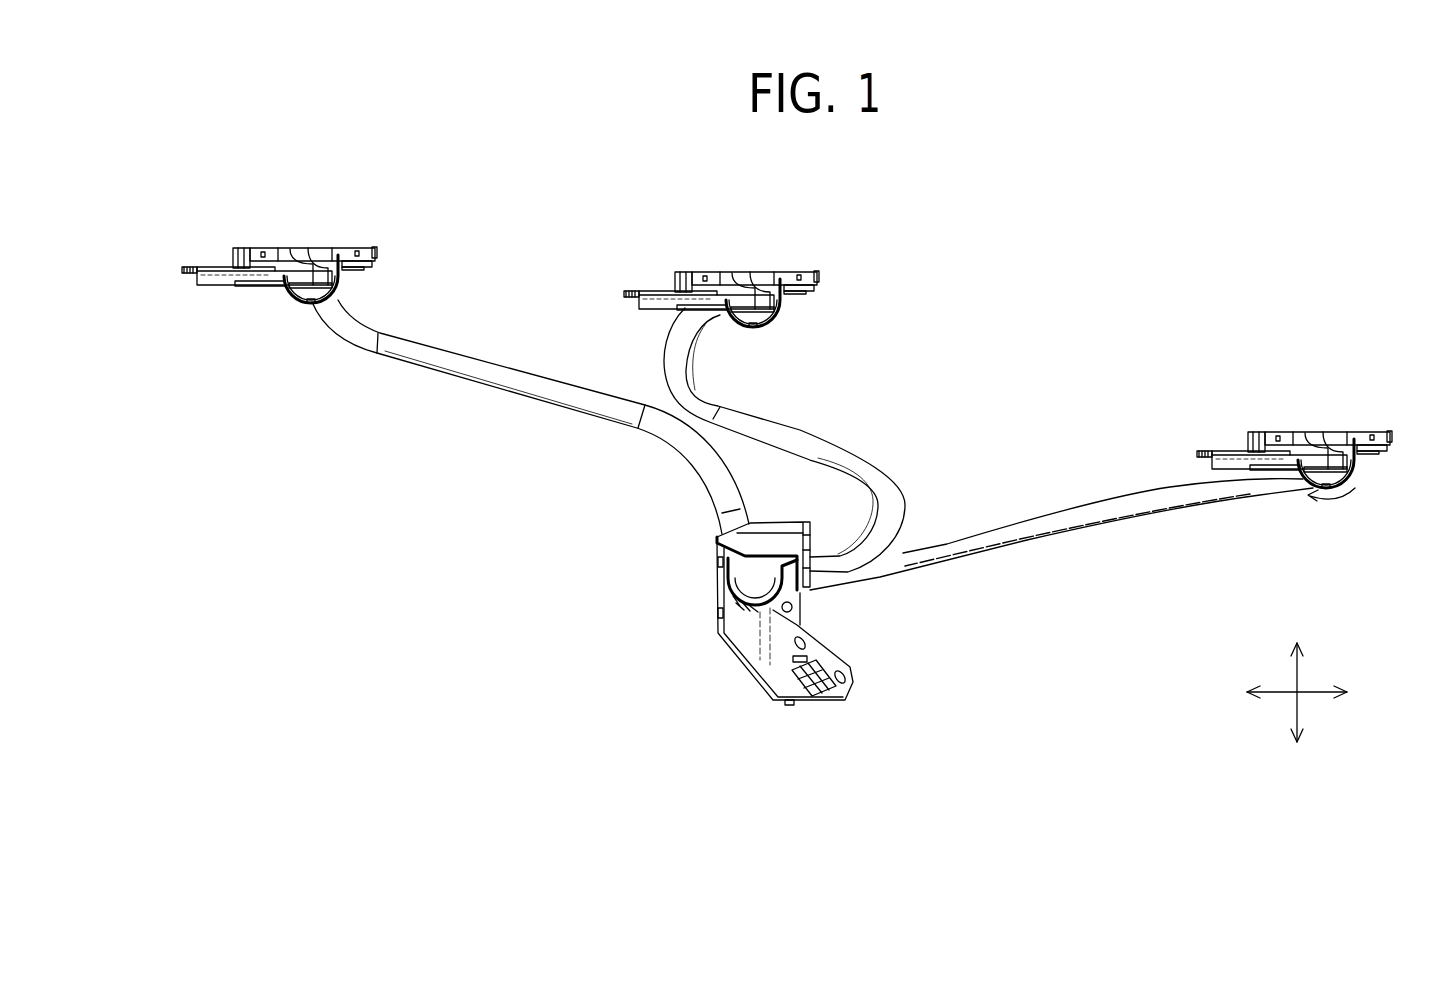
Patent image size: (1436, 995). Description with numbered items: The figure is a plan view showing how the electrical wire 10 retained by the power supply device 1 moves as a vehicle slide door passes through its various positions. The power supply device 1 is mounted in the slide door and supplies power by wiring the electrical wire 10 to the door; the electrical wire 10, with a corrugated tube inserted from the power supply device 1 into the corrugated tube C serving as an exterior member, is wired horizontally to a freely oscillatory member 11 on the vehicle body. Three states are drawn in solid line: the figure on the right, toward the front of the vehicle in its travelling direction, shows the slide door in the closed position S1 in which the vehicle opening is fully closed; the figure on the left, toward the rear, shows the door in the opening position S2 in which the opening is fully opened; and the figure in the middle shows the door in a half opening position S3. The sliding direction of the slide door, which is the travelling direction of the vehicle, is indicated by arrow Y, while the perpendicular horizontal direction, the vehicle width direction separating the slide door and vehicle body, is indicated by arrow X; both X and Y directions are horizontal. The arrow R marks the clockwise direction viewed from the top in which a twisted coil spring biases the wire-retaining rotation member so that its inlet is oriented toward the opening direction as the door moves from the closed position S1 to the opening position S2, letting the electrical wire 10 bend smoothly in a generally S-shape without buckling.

The power supply device 1 is at (337, 287).
The electrical wire 10 is at (493, 372).
The freely oscillatory member 11 is at (810, 638).
The corrugated tube C is at (812, 443).
The closed position S1 is at (1370, 432).
The opening position S2 is at (350, 247).
The half opening position S3 is at (788, 272).
The arrow R direction R is at (1333, 502).
The arrow X is at (1298, 673).
The arrow Y is at (1315, 695).